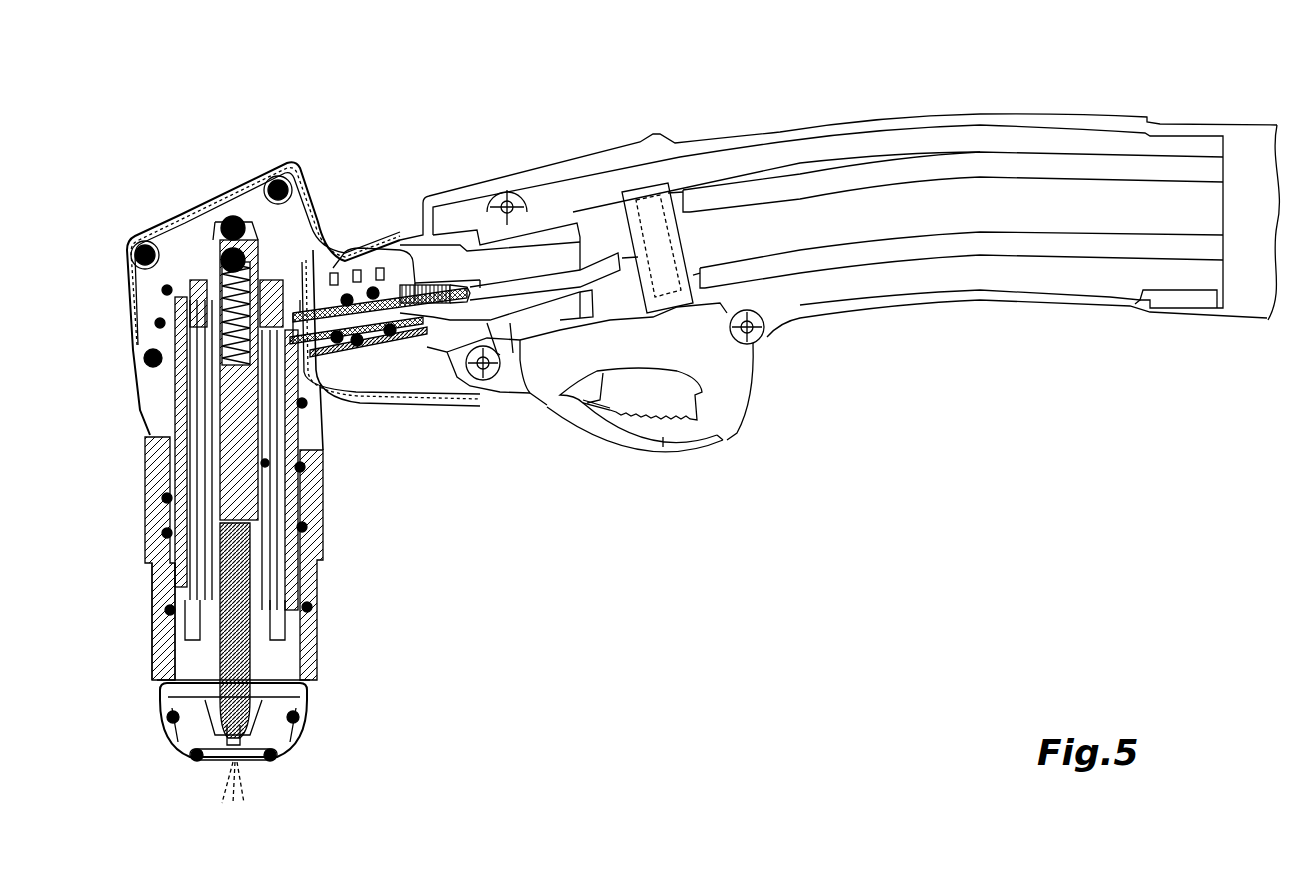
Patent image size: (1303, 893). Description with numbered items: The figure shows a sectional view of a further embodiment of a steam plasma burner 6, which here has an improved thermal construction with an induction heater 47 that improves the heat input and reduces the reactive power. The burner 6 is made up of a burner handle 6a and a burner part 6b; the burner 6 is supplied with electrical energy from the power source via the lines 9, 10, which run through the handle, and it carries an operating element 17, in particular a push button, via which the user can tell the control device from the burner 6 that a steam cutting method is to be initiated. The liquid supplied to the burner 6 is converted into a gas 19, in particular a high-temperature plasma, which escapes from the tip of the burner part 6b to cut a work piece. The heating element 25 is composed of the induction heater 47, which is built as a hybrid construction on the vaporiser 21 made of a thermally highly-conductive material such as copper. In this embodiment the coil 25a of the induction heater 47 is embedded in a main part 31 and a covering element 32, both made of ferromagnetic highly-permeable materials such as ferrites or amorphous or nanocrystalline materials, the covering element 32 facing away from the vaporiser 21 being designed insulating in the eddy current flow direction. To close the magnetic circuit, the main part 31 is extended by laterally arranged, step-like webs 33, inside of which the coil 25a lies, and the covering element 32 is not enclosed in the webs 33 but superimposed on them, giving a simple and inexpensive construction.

The steam plasma burner 6 is at (1113, 580).
The burner handle 6a is at (1110, 85).
The burner part 6b is at (197, 142).
The line 9 is at (887, 172).
The line 10 is at (873, 255).
The operating element 17 is at (613, 470).
The gas 19 is at (267, 777).
The vaporiser 21 is at (155, 583).
The heating element 25 is at (163, 493).
The coil 25a is at (310, 413).
The main part 31 is at (180, 395).
The covering element 32 is at (260, 473).
The webs 33 is at (165, 345).
The induction heater 47 is at (303, 530).